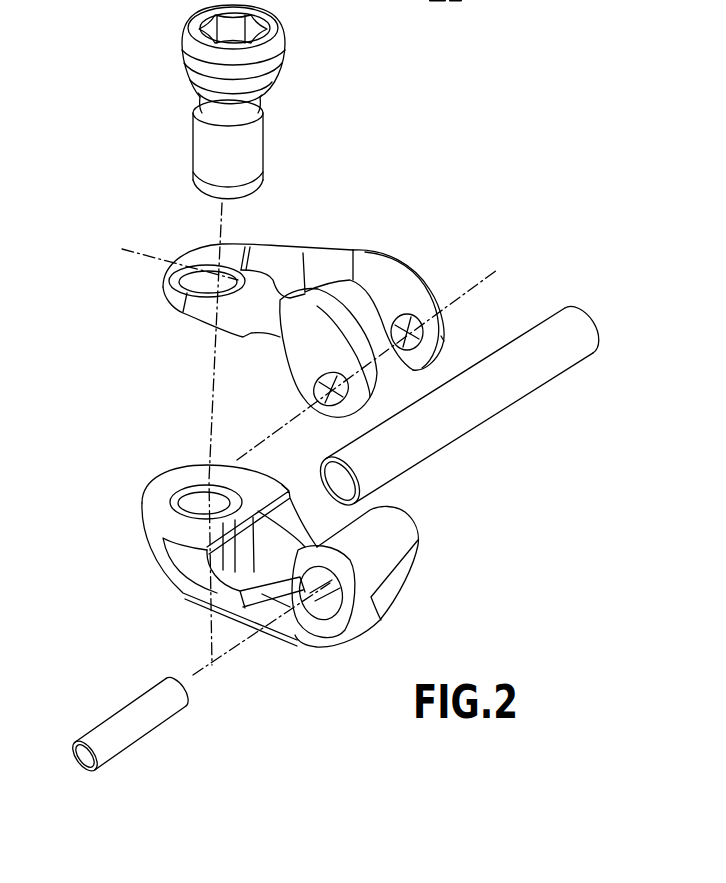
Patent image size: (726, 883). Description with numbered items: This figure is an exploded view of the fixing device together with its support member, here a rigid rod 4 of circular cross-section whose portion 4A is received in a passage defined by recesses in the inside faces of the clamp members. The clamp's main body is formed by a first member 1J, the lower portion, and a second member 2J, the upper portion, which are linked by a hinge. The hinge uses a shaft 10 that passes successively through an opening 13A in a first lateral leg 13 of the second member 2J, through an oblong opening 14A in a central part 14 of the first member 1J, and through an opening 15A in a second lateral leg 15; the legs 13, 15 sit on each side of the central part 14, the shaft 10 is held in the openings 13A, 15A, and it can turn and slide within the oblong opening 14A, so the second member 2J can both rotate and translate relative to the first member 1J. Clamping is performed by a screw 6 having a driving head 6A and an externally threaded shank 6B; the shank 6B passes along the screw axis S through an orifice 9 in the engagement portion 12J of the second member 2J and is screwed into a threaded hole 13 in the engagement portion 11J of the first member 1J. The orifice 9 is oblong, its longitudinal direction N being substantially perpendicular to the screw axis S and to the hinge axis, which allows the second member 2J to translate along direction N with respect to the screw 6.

The first member 1J is at (272, 584).
The second member 2J is at (282, 341).
The rod 4 is at (459, 379).
The portion of the rod 4A is at (452, 428).
The screw 6 is at (345, 33).
The head 6A is at (273, 62).
The shank 6B is at (253, 143).
The orifice 9 is at (196, 286).
The shaft 10 is at (117, 727).
The engagement portion 11J is at (157, 500).
The engagement portion 12J is at (212, 278).
The first lateral leg 13 is at (253, 403).
The opening 13A is at (331, 383).
The central part 14 is at (382, 604).
The oblong opening 14A is at (334, 606).
The second lateral leg 15 is at (374, 310).
The opening 15A is at (414, 342).
The screw axis S is at (221, 229).
The longitudinal direction N is at (127, 246).